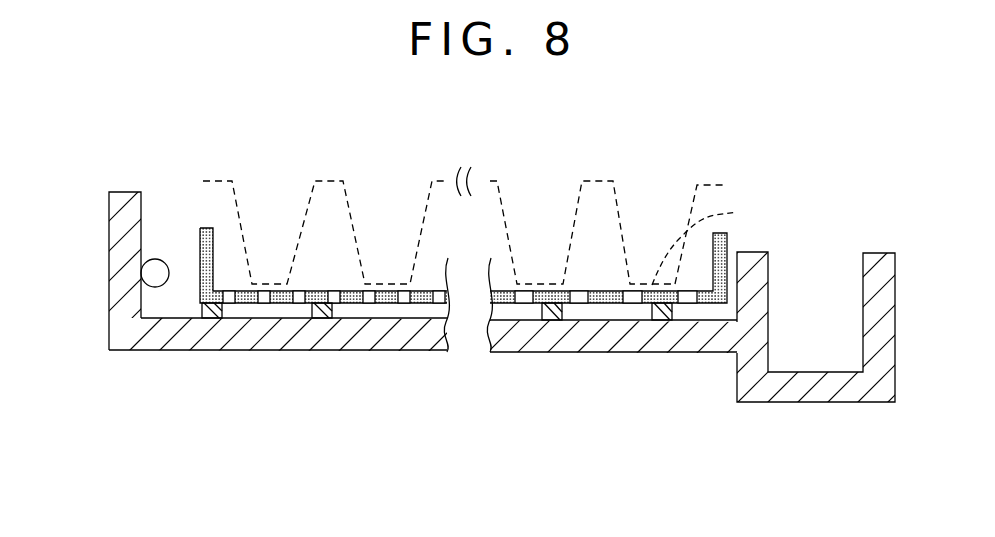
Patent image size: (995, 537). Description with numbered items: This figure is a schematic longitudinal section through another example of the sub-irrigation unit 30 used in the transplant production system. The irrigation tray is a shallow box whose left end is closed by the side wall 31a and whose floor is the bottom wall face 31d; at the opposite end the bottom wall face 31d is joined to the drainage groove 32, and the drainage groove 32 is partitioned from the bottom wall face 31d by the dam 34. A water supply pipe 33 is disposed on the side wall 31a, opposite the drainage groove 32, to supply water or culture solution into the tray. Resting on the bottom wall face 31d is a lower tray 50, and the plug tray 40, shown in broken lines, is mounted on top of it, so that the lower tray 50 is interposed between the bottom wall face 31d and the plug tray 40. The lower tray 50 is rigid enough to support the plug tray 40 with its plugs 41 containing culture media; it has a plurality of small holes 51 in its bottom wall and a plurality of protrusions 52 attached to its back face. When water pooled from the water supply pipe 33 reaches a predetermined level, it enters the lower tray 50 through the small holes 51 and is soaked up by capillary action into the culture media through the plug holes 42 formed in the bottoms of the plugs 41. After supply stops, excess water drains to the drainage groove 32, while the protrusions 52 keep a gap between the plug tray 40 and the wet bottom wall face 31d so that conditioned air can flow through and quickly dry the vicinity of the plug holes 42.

The sub-irrigation unit 30 is at (497, 301).
The side wall 31a is at (126, 228).
The bottom wall face 31d is at (366, 318).
The drainage groove 32 is at (812, 342).
The water supply pipe 33 is at (153, 273).
The dam 34 is at (756, 260).
The plug tray 40 is at (621, 169).
The plug 41 is at (699, 203).
The plug hole 42 is at (721, 240).
The lower tray 50 is at (196, 221).
The small hole 51 is at (294, 303).
The protrusion 52 is at (202, 312).